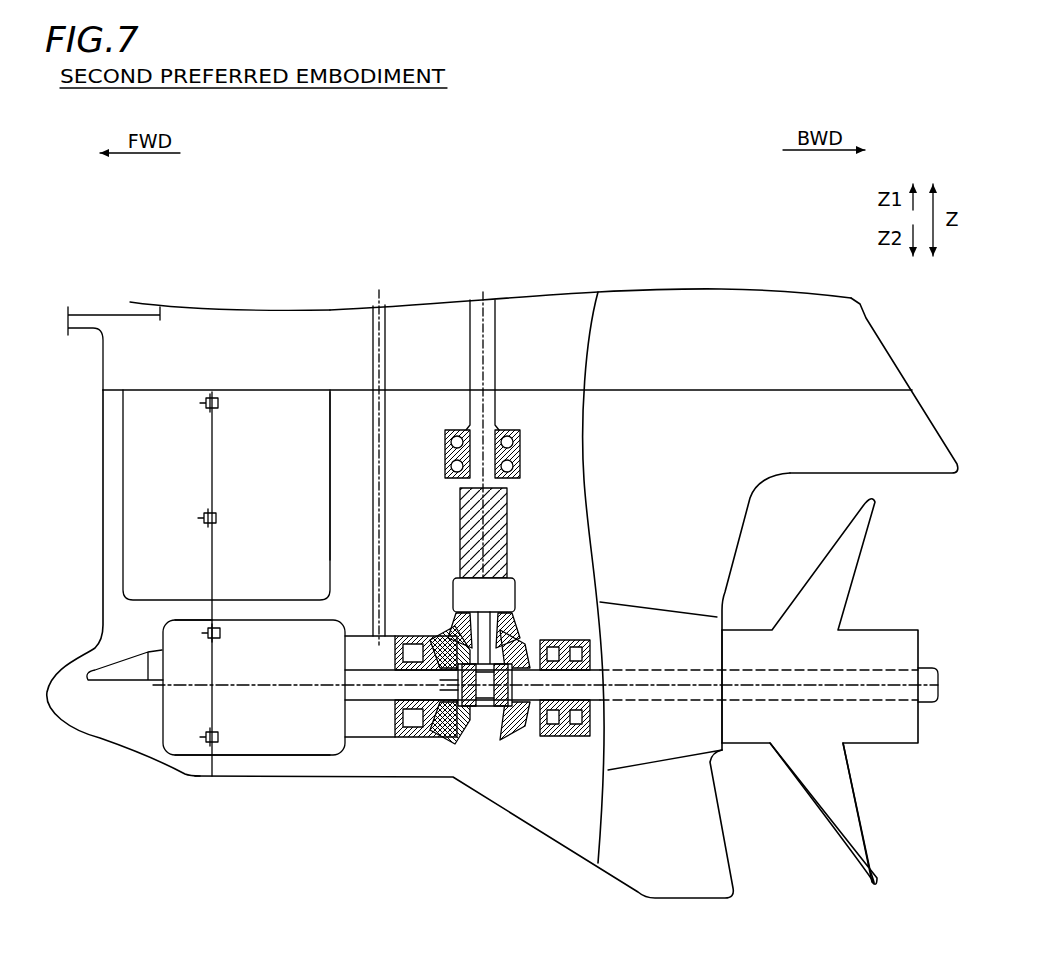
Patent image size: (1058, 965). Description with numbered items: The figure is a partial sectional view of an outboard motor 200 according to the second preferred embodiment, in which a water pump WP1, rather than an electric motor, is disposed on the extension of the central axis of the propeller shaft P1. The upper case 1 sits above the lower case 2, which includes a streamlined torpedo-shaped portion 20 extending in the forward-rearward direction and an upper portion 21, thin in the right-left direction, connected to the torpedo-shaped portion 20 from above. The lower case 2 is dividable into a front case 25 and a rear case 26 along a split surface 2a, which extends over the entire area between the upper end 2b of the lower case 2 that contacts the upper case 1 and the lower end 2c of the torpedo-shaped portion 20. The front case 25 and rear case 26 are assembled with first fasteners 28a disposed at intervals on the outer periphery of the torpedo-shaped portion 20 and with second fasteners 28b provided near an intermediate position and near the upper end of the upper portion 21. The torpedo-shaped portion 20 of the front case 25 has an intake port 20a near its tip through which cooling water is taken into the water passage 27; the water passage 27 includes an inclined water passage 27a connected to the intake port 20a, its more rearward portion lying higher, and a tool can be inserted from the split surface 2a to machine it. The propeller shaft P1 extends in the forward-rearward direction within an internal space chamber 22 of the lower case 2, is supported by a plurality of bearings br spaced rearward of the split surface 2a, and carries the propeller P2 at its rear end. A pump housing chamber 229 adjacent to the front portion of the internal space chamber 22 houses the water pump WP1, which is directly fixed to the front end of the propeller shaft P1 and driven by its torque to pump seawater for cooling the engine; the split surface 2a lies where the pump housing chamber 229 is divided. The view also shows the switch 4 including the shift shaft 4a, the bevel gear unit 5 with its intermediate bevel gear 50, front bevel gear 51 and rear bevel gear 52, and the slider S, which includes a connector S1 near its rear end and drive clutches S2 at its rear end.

The upper case 1 is at (896, 320).
The outboard motor 200 is at (785, 264).
The lower case 2 is at (762, 510).
The split surface 2a is at (238, 412).
The upper end 2b is at (276, 390).
The lower end 2c is at (247, 778).
The front case 25 is at (127, 380).
The upper portion 21 is at (112, 497).
The rear case 26 is at (332, 378).
The water passage 27 is at (143, 535).
The inclined water passage 27a is at (178, 606).
The first fasteners 28a is at (221, 633).
The second fasteners 28b is at (206, 400).
The torpedo-shaped portion 20 is at (68, 661).
The intake port 20a is at (100, 664).
The water pump WP1 is at (305, 744).
The pump housing chamber 229 is at (273, 752).
The switch 4 is at (390, 492).
The shift shaft 4a is at (381, 513).
The bevel gear unit 5 is at (513, 605).
The intermediate bevel gear 50 is at (507, 628).
The front bevel gear 51 is at (455, 727).
The rear bevel gear 52 is at (527, 727).
The internal space chamber 22 is at (505, 727).
The bearings br is at (410, 633).
The slider S is at (492, 730).
The connector S1 is at (481, 727).
The drive clutches S2 is at (468, 727).
The propeller shaft P1 is at (703, 710).
The propeller P2 is at (886, 733).